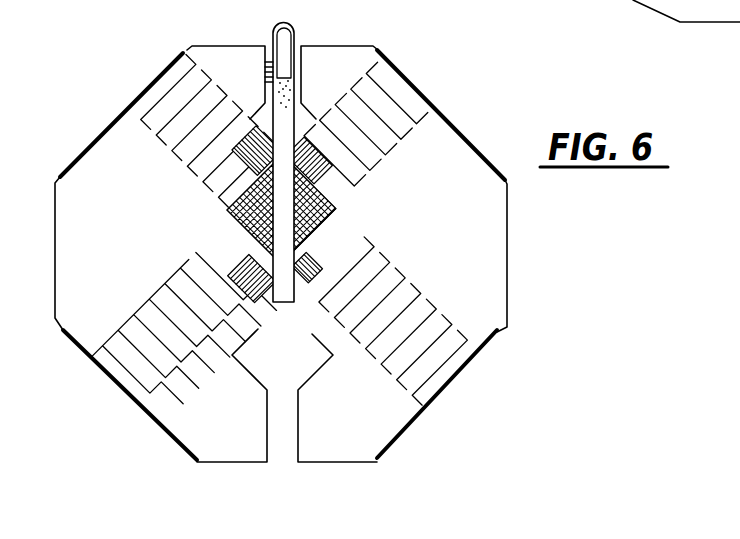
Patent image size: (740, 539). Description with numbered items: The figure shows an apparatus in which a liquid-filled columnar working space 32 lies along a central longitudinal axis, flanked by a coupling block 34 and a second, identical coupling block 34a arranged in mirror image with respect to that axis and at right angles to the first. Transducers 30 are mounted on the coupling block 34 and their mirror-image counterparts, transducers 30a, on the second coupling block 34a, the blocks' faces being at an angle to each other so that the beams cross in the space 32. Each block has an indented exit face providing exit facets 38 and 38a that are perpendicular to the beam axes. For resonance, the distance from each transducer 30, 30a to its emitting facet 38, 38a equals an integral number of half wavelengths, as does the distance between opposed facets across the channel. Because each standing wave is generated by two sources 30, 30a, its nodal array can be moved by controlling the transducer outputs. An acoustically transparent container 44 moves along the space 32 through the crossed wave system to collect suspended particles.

The transducer 30 is at (108, 123).
The transducer 30a is at (441, 113).
The liquid-filled columnar working space 32 is at (283, 400).
The coupling block 34 is at (242, 448).
The second coupling block 34a is at (332, 450).
The exit facet 38 is at (233, 278).
The exit facet 38a is at (361, 175).
The acoustically transparent container 44 is at (300, 78).